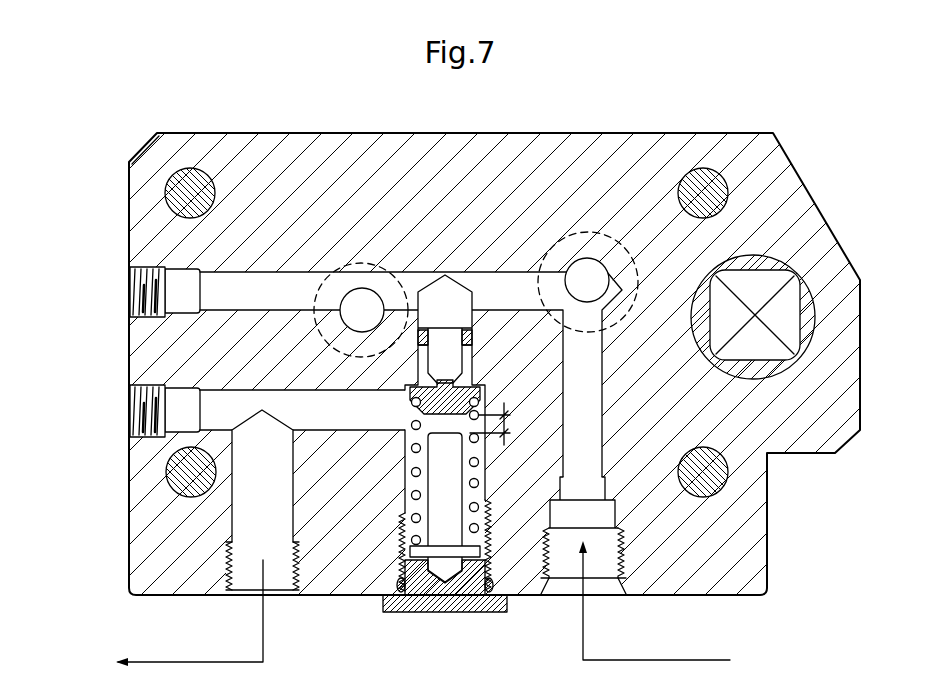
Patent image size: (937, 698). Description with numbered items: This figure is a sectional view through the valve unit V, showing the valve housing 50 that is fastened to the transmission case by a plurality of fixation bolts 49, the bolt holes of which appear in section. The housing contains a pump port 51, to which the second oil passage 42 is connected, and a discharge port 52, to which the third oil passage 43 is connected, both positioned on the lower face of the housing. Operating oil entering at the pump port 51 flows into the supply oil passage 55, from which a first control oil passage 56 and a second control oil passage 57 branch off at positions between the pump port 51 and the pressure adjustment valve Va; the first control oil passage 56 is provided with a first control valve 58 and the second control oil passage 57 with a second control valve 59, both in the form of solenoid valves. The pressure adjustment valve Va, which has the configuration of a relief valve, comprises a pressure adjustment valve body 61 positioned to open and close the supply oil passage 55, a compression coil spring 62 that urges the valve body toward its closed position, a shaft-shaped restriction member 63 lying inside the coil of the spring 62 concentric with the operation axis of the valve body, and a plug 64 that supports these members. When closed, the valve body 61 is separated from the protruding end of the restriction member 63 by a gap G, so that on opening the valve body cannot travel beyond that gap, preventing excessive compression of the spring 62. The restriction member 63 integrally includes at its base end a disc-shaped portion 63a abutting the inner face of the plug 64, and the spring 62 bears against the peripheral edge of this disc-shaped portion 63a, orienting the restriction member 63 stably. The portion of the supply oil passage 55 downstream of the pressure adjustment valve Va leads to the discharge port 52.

The valve unit V is at (104, 150).
The second oil passage 42 is at (690, 660).
The third oil passage 43 is at (215, 660).
The fixation bolts 49 is at (172, 186).
The valve housing 50 is at (482, 145).
The pump port 51 is at (598, 568).
The discharge port 52 is at (280, 593).
The supply oil passage 55 is at (217, 400).
The first control oil passage 56 is at (587, 258).
The second control oil passage 57 is at (361, 288).
The first control valve 58 is at (622, 238).
The second control valve 59 is at (378, 263).
The pressure adjustment valve body 61 is at (479, 384).
The compression coil spring 62 is at (412, 476).
The restriction member 63 is at (456, 498).
The disc-shaped portion 63a is at (422, 558).
The plug 64 is at (444, 606).
The gap G is at (512, 416).
The pressure adjustment valve Va is at (500, 618).